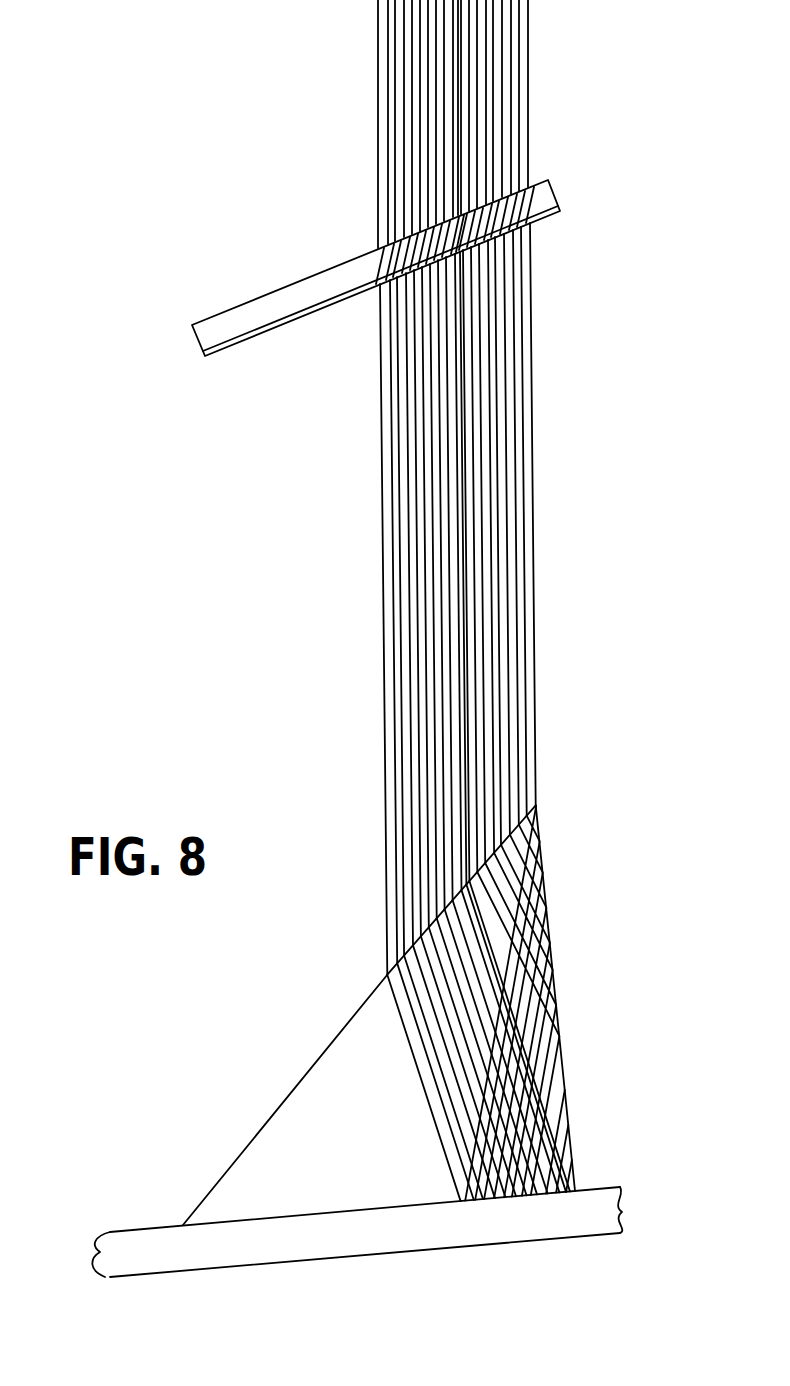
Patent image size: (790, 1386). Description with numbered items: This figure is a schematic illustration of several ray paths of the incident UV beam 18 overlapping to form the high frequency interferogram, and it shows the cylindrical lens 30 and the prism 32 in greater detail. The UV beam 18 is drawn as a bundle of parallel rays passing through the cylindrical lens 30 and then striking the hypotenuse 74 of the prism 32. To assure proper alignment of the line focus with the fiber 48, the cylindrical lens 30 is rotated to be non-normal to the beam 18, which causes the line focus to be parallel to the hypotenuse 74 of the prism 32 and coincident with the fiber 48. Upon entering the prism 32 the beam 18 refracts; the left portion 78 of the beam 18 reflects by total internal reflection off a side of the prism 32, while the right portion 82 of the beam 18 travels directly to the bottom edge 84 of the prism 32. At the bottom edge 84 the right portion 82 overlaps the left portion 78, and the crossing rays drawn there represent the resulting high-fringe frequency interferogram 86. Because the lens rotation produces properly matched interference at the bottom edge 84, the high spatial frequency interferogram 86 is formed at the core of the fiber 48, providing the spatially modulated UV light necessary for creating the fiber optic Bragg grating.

The UV beam 18 is at (426, 487).
The cylindrical lens 30 is at (556, 195).
The left portion of the beam 78 is at (398, 703).
The right portion of the beam 82 is at (512, 690).
The prism 32 is at (369, 1015).
The hypotenuse of the prism 74 is at (358, 1012).
The fiber 48 is at (387, 1256).
The bottom edge of the prism 84 is at (383, 1205).
The high-fringe frequency interferogram 86 is at (516, 1228).